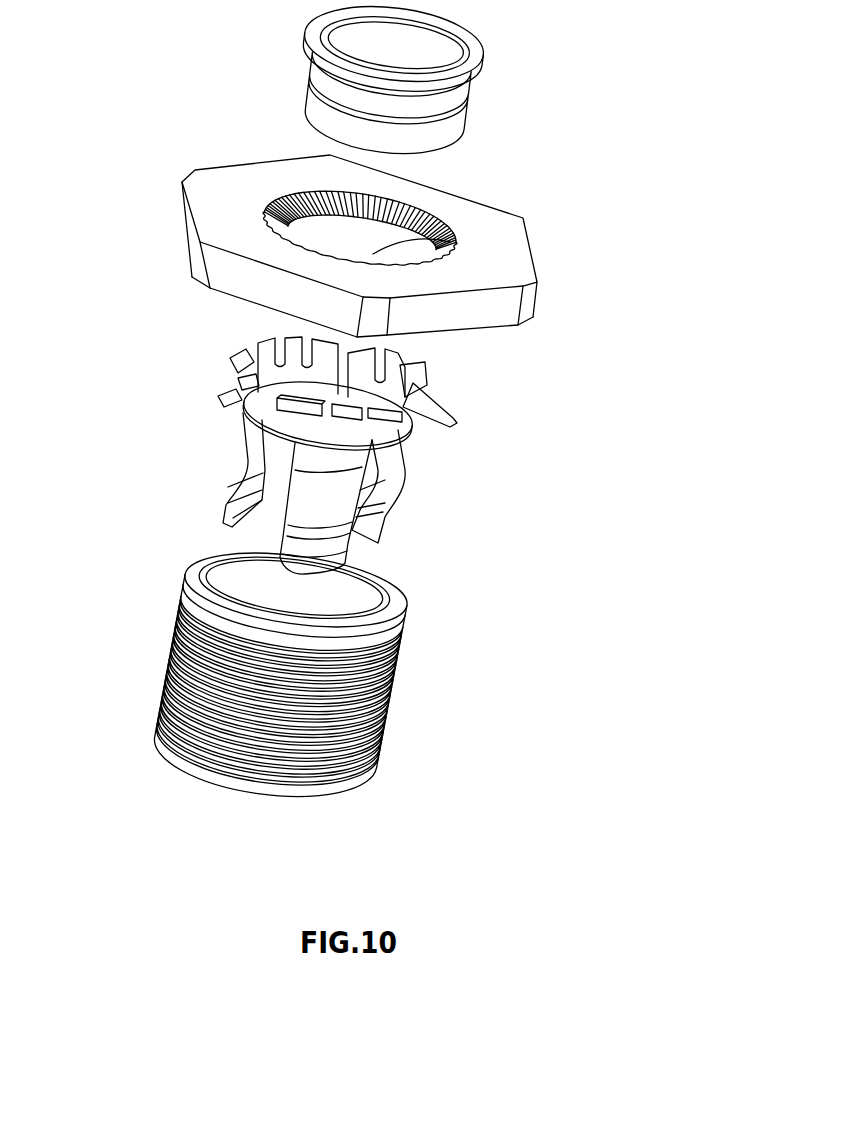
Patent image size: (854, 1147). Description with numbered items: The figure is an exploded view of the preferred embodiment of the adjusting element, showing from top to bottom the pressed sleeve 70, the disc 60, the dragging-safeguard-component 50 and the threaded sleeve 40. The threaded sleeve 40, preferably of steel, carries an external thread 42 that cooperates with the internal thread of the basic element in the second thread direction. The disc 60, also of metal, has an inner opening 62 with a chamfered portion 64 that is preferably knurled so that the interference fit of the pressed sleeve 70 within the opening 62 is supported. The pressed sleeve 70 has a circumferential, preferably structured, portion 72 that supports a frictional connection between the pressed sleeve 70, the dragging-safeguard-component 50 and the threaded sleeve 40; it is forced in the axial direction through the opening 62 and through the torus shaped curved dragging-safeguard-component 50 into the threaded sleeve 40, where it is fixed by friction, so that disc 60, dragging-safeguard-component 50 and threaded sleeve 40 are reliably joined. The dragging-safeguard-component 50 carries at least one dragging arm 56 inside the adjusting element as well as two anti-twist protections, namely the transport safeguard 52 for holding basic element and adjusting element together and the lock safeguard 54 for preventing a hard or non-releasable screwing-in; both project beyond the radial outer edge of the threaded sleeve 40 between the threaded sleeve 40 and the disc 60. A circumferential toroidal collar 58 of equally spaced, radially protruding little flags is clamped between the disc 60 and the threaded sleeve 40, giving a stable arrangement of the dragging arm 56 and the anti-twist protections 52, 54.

The threaded sleeve 40 is at (283, 666).
The external thread 42 is at (168, 647).
The dragging-safeguard-component 50 is at (350, 442).
The transport safeguard 52 is at (227, 400).
The lock safeguard 54 is at (450, 413).
The dragging arm 56 is at (387, 505).
The toroidal collar 58 is at (247, 343).
The disc 60 is at (403, 211).
The inner opening 62 is at (458, 238).
The chamfered portion 64 is at (300, 193).
The pressed sleeve 70 is at (407, 81).
The circumferential structured portion 72 is at (312, 99).